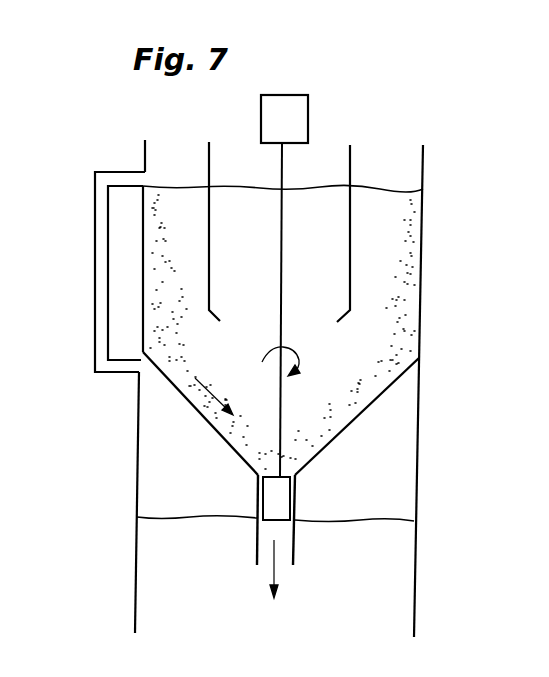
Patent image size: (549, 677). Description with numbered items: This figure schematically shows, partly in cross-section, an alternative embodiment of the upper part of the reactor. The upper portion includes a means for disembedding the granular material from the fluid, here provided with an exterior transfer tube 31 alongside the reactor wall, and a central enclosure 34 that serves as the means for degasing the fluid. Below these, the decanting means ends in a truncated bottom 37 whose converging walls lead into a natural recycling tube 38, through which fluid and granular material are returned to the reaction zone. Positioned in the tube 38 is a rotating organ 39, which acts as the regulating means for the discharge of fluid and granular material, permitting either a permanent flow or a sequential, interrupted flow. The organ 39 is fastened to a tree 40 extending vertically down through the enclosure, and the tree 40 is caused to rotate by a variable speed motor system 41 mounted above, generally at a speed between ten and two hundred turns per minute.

The exterior transfer tube 31 is at (102, 214).
The central enclosure 34 is at (342, 228).
The truncated bottom 37 is at (383, 390).
The natural recycling tube 38 is at (258, 502).
The rotating organ 39 is at (279, 498).
The tree 40 is at (280, 198).
The variable speed motor system 41 is at (300, 115).